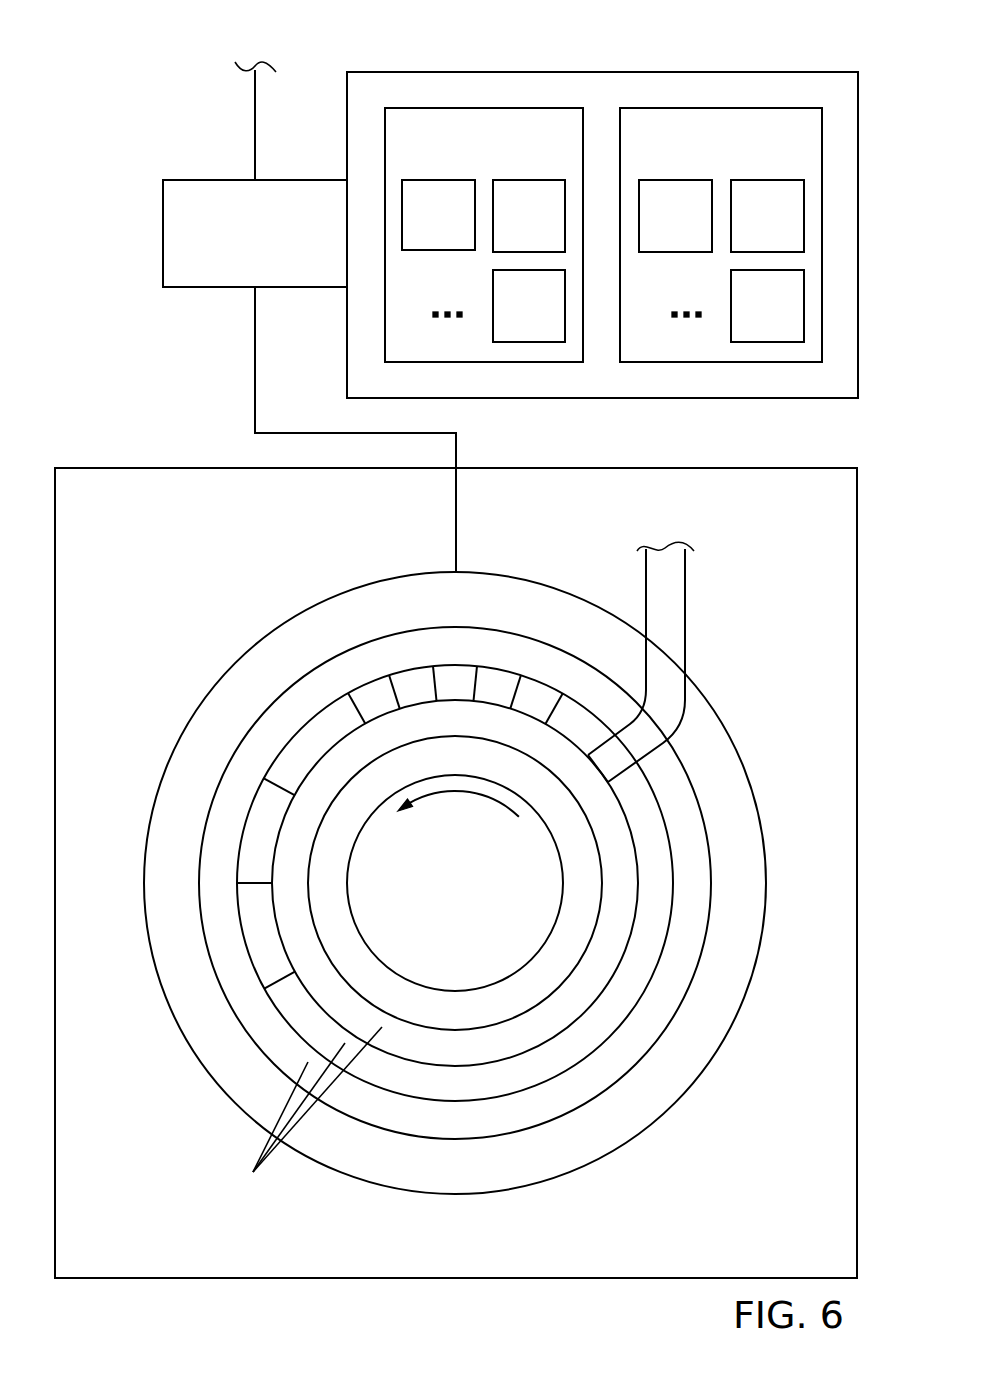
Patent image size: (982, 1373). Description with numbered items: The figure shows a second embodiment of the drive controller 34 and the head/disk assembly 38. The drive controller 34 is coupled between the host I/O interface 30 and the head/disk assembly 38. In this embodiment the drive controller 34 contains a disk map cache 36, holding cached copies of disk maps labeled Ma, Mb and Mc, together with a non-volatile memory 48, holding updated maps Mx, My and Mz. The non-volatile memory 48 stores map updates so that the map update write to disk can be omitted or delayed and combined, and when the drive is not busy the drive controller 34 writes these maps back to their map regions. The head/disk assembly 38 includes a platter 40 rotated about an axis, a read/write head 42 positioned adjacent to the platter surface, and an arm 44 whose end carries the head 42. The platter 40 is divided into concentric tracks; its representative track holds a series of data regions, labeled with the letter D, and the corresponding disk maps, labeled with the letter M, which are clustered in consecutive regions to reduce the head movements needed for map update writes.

The host I/O interface 30 is at (255, 93).
The drive controller 34 is at (241, 273).
The disk map cache 36 is at (521, 171).
The non-volatile memory 48 is at (765, 171).
The head/disk assembly 38 is at (91, 559).
The platter 40 is at (638, 1137).
The read/write head 42 is at (610, 760).
The arm 44 is at (685, 598).